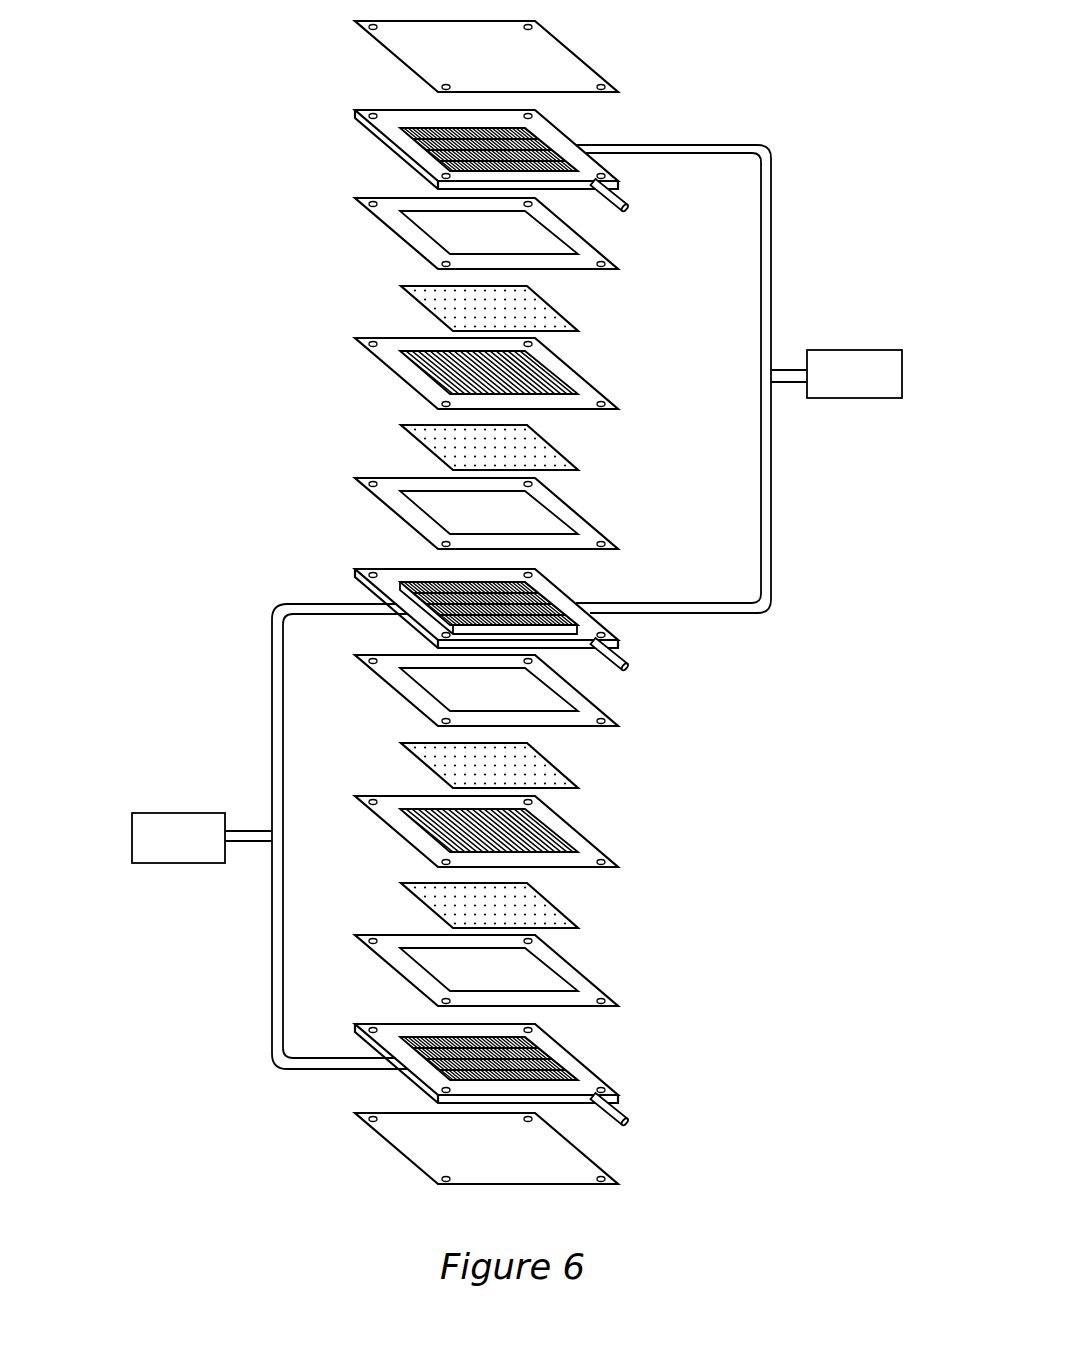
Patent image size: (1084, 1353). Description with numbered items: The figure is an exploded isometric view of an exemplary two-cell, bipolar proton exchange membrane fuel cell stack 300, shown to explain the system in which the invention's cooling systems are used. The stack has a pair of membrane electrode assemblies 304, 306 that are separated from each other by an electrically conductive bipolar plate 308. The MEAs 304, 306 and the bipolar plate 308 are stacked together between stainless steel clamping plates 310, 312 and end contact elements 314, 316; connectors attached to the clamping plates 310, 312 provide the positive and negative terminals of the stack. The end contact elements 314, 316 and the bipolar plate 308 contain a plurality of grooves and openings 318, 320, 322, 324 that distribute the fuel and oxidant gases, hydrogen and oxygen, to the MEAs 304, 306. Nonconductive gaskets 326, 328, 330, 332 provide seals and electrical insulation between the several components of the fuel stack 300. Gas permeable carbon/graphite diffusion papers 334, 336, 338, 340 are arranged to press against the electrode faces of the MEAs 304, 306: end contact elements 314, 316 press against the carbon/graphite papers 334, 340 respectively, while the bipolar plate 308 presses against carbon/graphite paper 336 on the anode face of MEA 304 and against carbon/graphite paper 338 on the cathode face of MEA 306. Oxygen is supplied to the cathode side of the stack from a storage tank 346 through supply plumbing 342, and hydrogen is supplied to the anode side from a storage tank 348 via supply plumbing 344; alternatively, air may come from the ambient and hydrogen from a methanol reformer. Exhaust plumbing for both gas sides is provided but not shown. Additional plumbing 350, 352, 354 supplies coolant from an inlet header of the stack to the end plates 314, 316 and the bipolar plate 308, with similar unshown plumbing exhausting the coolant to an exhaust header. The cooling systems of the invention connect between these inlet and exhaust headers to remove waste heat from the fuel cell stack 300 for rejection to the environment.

The fuel cell stack 300 is at (200, 625).
The membrane electrode assembly 304 is at (402, 377).
The membrane electrode assembly 306 is at (583, 826).
The bipolar plate 308 is at (479, 595).
The clamping plate 310 is at (410, 60).
The clamping plate 312 is at (590, 1153).
The end contact element 314 is at (464, 160).
The end contact element 316 is at (538, 1071).
The grooves and openings 318 is at (402, 153).
The grooves and openings 320 is at (535, 591).
The grooves and openings 322 is at (432, 620).
The grooves and openings 324 is at (560, 1074).
The nonconductive gasket 326 is at (415, 237).
The nonconductive gasket 328 is at (390, 495).
The nonconductive gasket 330 is at (587, 708).
The nonconductive gasket 332 is at (580, 970).
The carbon/graphite diffusion paper 334 is at (422, 296).
The carbon/graphite diffusion paper 336 is at (433, 442).
The carbon/graphite diffusion paper 338 is at (560, 768).
The carbon/graphite diffusion paper 340 is at (560, 905).
The supply plumbing 342 is at (771, 497).
The supply plumbing 344 is at (272, 947).
The storage tank 346 is at (875, 352).
The storage tank 348 is at (145, 812).
The plumbing 350 is at (622, 190).
The plumbing 352 is at (628, 657).
The plumbing 354 is at (622, 1113).